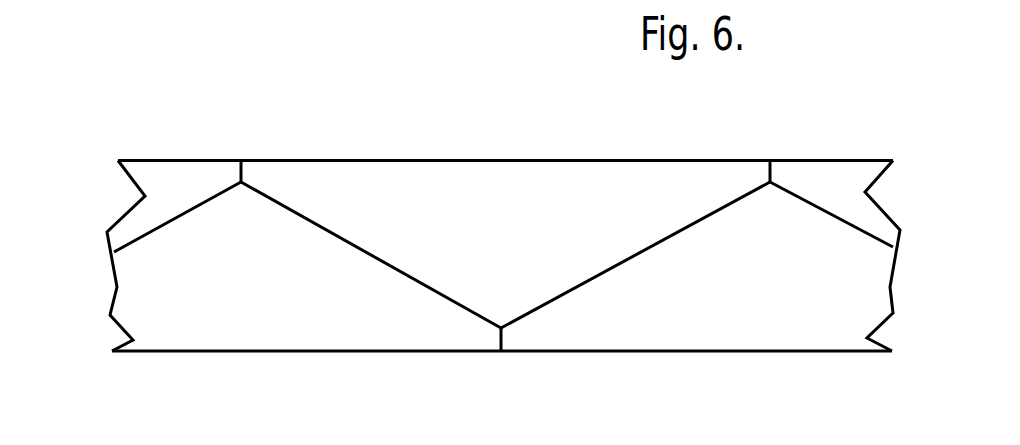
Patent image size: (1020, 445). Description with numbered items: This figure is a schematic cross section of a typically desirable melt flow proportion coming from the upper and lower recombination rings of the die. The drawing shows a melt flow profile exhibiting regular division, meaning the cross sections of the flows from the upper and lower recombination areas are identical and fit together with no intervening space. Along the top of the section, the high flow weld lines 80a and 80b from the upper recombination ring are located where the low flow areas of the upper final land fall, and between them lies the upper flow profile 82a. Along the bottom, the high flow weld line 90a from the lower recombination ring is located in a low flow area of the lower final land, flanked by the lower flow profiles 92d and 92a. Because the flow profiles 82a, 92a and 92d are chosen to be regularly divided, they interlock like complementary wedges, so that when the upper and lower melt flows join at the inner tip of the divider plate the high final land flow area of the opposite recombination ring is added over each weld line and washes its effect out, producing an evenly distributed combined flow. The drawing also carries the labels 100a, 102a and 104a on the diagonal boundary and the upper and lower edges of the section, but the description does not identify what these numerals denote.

The high flow weld line 80a is at (243, 168).
The high flow weld line 80b is at (772, 166).
The flow profile 82a is at (426, 189).
The high flow weld line 90a is at (502, 338).
The flow profile 92a is at (732, 319).
The flow profile 92d is at (265, 322).
The diagonal strut 100a is at (162, 228).
The upper rail / top layer 102a is at (183, 161).
The lower rail / bottom layer 104a is at (182, 351).